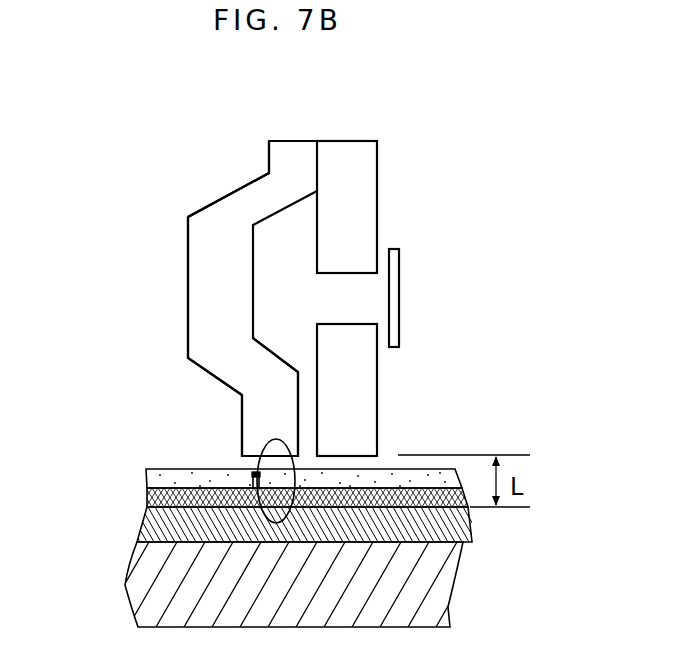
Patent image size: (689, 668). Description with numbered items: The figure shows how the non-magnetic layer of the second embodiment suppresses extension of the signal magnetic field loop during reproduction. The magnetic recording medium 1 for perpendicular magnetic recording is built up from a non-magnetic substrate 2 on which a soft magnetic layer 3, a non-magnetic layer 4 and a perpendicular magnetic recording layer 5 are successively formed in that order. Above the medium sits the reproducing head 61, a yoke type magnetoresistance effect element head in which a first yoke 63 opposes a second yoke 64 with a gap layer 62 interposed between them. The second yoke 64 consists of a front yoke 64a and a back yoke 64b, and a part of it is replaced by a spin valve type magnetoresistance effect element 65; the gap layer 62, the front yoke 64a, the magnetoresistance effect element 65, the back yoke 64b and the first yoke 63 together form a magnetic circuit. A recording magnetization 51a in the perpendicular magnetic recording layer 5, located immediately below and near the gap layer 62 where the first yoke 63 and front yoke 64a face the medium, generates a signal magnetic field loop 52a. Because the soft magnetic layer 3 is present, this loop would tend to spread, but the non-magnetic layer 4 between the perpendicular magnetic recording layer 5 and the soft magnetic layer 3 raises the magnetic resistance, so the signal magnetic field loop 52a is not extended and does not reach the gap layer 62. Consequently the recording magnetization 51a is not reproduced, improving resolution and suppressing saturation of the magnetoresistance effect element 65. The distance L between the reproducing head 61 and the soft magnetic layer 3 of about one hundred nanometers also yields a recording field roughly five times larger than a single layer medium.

The magnetic recording medium 1 is at (266, 555).
The non-magnetic substrate 2 is at (295, 584).
The soft magnetic layer 3 is at (158, 528).
The non-magnetic layer 4 is at (162, 500).
The perpendicular magnetic recording layer 5 is at (163, 478).
The recording magnetization 51a is at (243, 470).
The signal magnetic field loop 52a is at (287, 442).
The reproducing head 61 is at (430, 127).
The gap layer 62 is at (307, 399).
The first yoke 63 is at (200, 255).
The second yoke 64 is at (454, 298).
The front yoke 64a is at (410, 390).
The back yoke 64b is at (357, 207).
The magnetoresistance effect element 65 is at (393, 293).